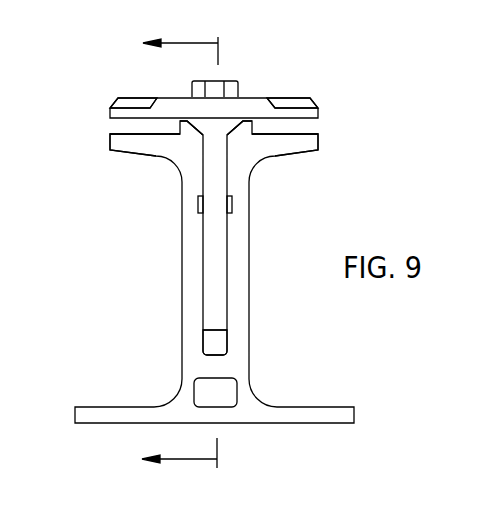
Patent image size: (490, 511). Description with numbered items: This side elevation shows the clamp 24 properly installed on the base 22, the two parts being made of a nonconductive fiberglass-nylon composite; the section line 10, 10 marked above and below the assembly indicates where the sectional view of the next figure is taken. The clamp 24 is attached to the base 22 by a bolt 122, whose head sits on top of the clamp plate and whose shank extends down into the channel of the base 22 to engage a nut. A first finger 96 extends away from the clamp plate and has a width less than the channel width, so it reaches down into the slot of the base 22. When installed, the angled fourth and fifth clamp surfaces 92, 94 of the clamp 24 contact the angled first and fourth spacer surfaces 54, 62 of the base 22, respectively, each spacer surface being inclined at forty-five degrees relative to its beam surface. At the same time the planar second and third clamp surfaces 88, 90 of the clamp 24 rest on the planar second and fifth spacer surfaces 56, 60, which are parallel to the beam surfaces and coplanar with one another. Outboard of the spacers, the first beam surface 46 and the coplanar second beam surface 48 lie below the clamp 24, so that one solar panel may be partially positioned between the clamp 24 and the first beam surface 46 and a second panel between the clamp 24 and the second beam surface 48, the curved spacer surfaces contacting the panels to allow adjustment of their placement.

The section line 10- 10 is at (185, 254).
The base 22 is at (188, 263).
The clamp 24 is at (298, 99).
The first beam surface 46 is at (110, 136).
The second beam surface 48 is at (318, 135).
The first spacer surface 54 is at (192, 137).
The second spacer surface 56 is at (153, 155).
The fifth spacer surface 60 is at (275, 155).
The fourth spacer surface 62 is at (238, 137).
The second clamp surface 88 is at (108, 119).
The third clamp surface 90 is at (314, 118).
The fourth clamp surface 92 is at (190, 131).
The fifth clamp surface 94 is at (238, 131).
The first finger 96 is at (212, 321).
The bolt 122 is at (232, 80).